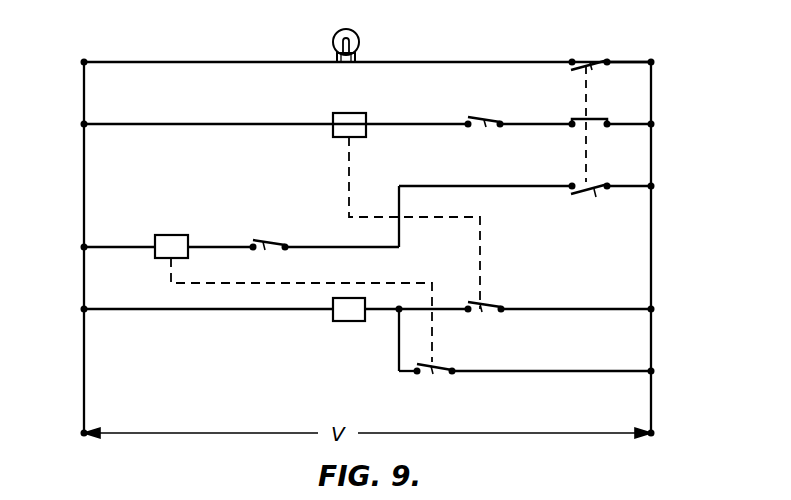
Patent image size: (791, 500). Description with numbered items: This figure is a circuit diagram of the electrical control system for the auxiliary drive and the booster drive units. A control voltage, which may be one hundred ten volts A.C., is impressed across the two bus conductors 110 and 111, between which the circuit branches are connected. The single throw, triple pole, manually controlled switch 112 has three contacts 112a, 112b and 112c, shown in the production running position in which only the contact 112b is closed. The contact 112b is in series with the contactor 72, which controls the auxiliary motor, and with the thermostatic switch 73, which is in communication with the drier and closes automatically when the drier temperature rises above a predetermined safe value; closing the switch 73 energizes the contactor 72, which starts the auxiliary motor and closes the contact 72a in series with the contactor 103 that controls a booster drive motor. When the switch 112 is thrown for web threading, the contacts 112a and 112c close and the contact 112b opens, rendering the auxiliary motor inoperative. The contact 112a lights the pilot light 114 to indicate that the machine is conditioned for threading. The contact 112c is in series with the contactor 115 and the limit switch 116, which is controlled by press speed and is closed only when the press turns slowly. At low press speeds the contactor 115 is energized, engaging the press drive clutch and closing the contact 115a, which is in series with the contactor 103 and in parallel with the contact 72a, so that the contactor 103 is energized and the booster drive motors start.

The bus conductor 110 is at (84, 281).
The bus conductor 111 is at (651, 277).
The pilot light 114 is at (357, 52).
The contactor 72 is at (356, 111).
The thermostatic switch 73 is at (484, 136).
The manually controlled switch 112 is at (586, 151).
The switch contact 112a is at (594, 51).
The switch contact 112b is at (604, 109).
The switch contact 112c is at (598, 207).
The contactor 115 is at (175, 225).
The limit switch 116 is at (270, 263).
The contactor 103 is at (344, 323).
The contact 72a is at (497, 297).
The contact 115a is at (441, 365).